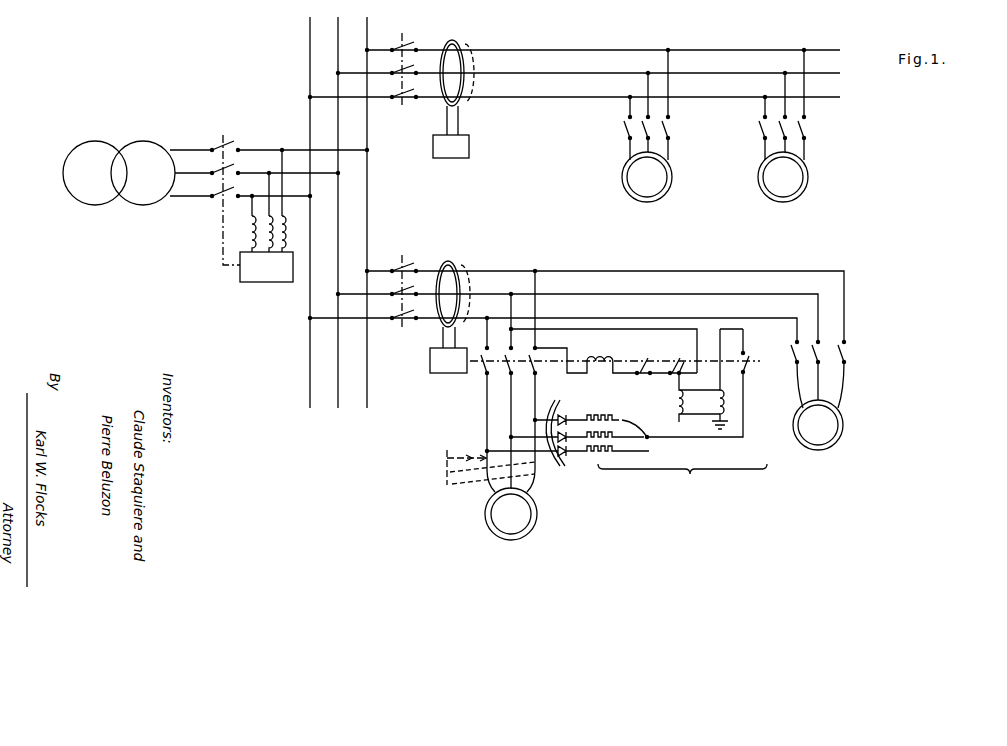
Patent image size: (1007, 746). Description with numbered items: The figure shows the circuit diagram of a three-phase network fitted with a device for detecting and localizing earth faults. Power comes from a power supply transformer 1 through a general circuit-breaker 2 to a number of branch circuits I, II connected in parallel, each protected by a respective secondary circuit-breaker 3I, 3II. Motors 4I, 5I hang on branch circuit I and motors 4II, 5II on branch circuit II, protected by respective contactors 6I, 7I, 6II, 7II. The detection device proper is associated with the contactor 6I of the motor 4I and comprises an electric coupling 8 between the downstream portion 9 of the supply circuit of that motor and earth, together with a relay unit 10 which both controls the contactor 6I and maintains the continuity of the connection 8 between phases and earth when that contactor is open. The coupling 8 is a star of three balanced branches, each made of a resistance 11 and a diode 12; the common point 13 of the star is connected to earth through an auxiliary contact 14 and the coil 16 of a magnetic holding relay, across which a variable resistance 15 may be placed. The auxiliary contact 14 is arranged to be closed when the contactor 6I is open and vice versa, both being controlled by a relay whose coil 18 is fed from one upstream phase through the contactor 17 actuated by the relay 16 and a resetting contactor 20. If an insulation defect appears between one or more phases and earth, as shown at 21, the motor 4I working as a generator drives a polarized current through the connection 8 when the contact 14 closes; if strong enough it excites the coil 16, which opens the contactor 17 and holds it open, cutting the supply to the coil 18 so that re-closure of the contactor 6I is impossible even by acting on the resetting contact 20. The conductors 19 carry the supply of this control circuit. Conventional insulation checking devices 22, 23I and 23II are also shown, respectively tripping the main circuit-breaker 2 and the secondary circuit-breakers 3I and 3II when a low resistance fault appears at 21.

The power supply transformer 1 is at (141, 152).
The general circuit-breaker 2 is at (229, 144).
The insulation checking device 22 is at (266, 215).
The branch circuit I is at (579, 282).
The branch circuit II is at (563, 61).
The secondary circuit-breaker 3I is at (406, 263).
The secondary circuit-breaker 3II is at (416, 46).
The checking device 23I is at (430, 364).
The checking device 23II is at (457, 147).
The motor 4I is at (522, 515).
The motor 4II is at (657, 178).
The motor 5I is at (827, 429).
The motor 5II is at (793, 178).
The contactor 6I is at (478, 374).
The contactor 6II is at (670, 133).
The contactor 7I is at (850, 360).
The contactor 7II is at (811, 134).
The electric coupling 8 is at (682, 481).
The downstream portion 9 is at (494, 414).
The relay unit 10 is at (675, 347).
The resistance 11 is at (646, 449).
The diode 12 is at (552, 360).
The common point 13 is at (651, 435).
The auxiliary contact 14 is at (750, 353).
The variable resistance 15 is at (724, 402).
The coil of magnetic holding relay 16 is at (671, 401).
The contactor 17 is at (686, 359).
The coil 18 is at (608, 358).
The conductors 19 is at (516, 308).
The resetting contactor 20 is at (646, 360).
The insulation defect 21 is at (469, 483).